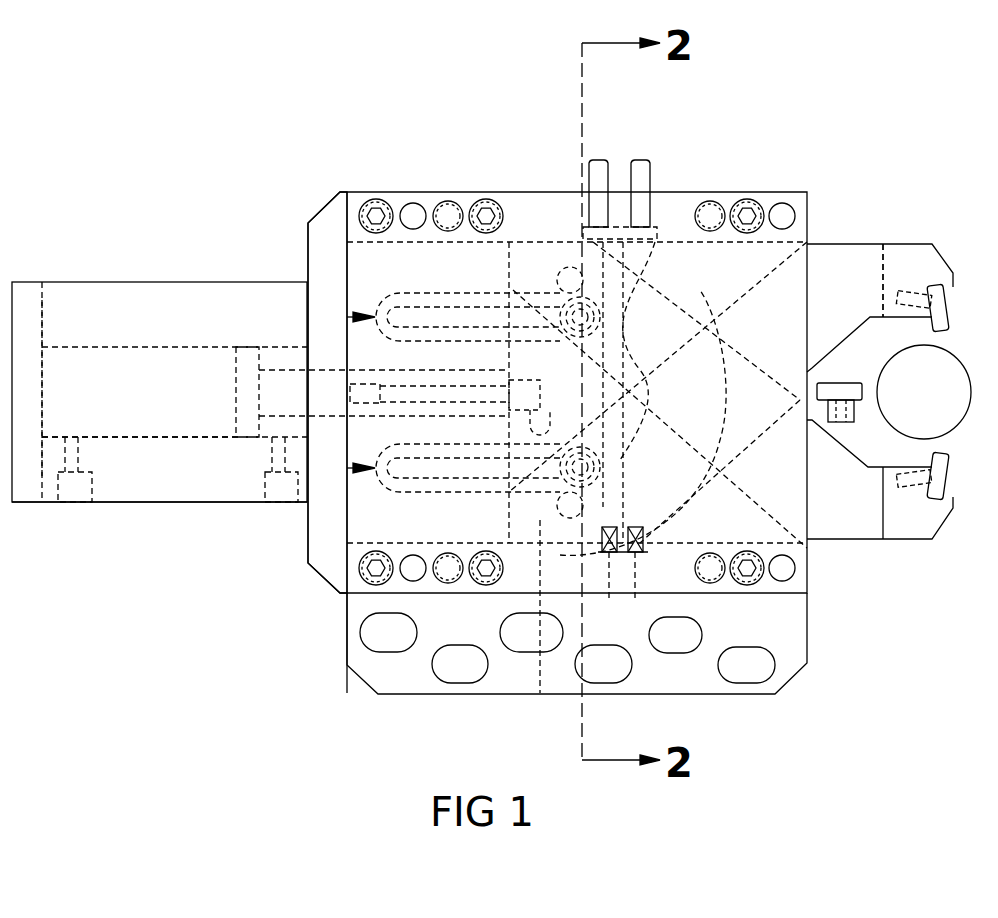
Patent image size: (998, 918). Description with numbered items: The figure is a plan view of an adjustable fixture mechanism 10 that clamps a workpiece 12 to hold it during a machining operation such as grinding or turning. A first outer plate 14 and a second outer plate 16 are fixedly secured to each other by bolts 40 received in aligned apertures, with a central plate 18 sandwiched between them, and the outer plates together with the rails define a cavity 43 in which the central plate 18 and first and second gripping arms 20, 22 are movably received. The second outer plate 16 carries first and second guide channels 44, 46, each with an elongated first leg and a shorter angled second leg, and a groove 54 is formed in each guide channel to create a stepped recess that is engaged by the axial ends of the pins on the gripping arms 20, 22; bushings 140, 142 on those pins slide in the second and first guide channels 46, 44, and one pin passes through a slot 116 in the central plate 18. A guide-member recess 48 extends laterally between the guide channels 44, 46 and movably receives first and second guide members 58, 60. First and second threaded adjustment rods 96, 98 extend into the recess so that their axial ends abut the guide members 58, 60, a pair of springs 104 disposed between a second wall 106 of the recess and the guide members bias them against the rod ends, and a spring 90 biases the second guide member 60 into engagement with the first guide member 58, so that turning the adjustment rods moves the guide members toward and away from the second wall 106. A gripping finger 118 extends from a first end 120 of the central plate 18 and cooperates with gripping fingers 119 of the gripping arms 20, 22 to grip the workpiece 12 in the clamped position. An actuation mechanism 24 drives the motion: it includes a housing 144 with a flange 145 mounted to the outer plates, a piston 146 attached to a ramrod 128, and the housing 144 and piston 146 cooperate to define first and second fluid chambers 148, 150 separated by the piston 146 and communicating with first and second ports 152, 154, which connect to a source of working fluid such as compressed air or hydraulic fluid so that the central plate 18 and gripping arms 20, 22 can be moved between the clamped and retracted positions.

The adjustable fixture mechanism 10 is at (315, 156).
The workpiece 12 is at (959, 396).
The first outer plate 14 is at (768, 702).
The second outer plate 16 is at (798, 186).
The central plate 18 is at (522, 530).
The first gripping arm 20 is at (836, 258).
The second gripping arm 22 is at (866, 528).
The actuation mechanism 24 is at (106, 272).
The bolts 40 is at (376, 212).
The cavity 43 is at (470, 250).
The first guide channel 44 is at (347, 317).
The second guide channel 46 is at (348, 470).
The guide-member recess 48 is at (692, 330).
The groove 54 is at (416, 203).
The first guide member 58 is at (647, 300).
The second guide member 60 is at (710, 212).
The spring 90 is at (665, 522).
The first threaded adjustment rod 96 is at (640, 160).
The second threaded adjustment rod 98 is at (598, 160).
The springs 104 is at (610, 600).
The second wall 106 is at (652, 556).
The slot 116 is at (540, 248).
The gripping finger 118 is at (842, 386).
The gripping fingers 119 is at (948, 312).
The first end 120 is at (856, 320).
The ramrod 128 is at (278, 380).
The bushing 140 is at (540, 693).
The bushing 142 is at (566, 270).
The housing 144 is at (148, 502).
The flange 145 is at (326, 222).
The piston 146 is at (218, 500).
The first fluid chamber 148 is at (97, 365).
The second fluid chamber 150 is at (247, 380).
The first port 152 is at (80, 503).
The second port 154 is at (262, 505).